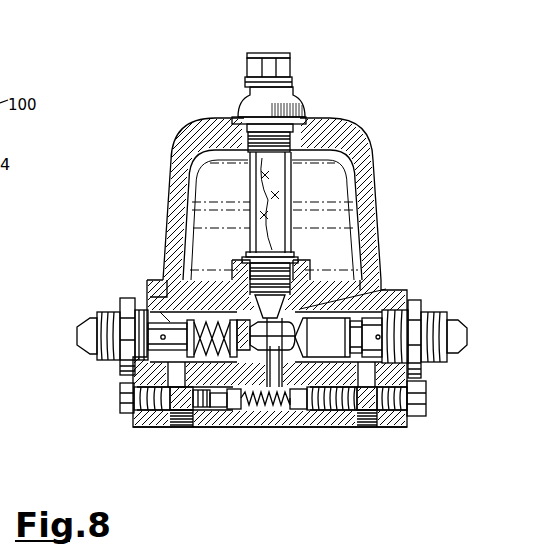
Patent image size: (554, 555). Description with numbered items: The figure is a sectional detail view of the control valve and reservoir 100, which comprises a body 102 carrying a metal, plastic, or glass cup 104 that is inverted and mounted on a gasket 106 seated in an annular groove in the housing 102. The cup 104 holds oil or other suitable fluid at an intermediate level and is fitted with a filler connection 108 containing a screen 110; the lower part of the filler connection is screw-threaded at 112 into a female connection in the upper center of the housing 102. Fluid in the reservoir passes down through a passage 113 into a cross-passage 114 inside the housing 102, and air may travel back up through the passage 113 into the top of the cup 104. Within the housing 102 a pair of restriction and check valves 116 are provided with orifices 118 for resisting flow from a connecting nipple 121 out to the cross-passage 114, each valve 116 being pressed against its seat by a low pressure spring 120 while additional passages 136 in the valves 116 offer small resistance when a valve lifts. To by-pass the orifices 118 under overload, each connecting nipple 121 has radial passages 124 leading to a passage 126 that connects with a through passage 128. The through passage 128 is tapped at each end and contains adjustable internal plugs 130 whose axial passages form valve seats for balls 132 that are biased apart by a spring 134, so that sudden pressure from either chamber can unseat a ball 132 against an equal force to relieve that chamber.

The control valve and reservoir 100 is at (388, 116).
The body 102 is at (197, 427).
The cup 104 is at (175, 150).
The gasket 106 is at (153, 280).
The filler connection 108 is at (297, 100).
The screen 110 is at (273, 210).
The screw thread 112 is at (294, 262).
The passage 113 is at (177, 378).
The cross-passage 114 is at (266, 417).
The restriction and check valve 116 is at (151, 431).
The orifice 118 is at (386, 289).
The low pressure spring 120 is at (212, 315).
The connecting nipple 121 is at (92, 343).
The radial passage 124 is at (167, 312).
The passage 126 is at (125, 420).
The through passage 128 is at (322, 428).
The adjustable internal plug 130 is at (202, 431).
The ball 132 is at (247, 428).
The spring 134 is at (286, 425).
The additional passage 136 is at (318, 268).